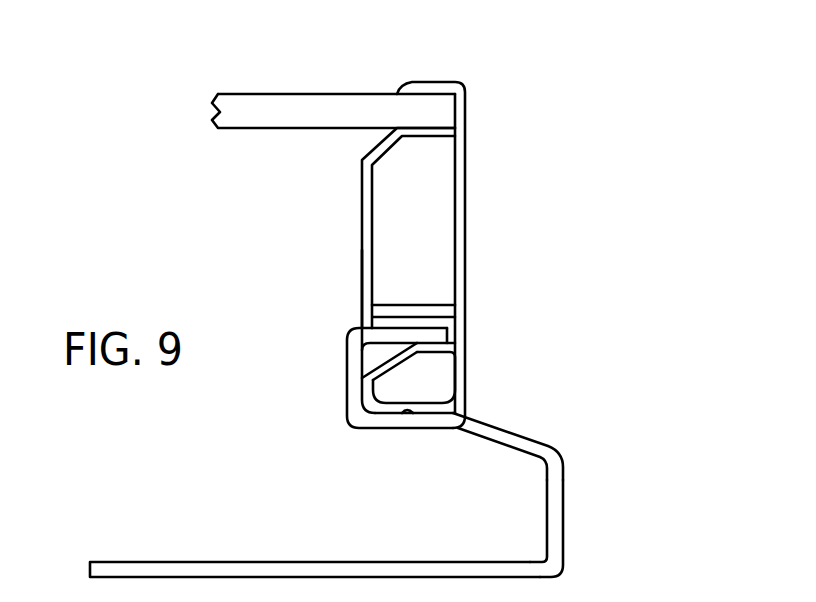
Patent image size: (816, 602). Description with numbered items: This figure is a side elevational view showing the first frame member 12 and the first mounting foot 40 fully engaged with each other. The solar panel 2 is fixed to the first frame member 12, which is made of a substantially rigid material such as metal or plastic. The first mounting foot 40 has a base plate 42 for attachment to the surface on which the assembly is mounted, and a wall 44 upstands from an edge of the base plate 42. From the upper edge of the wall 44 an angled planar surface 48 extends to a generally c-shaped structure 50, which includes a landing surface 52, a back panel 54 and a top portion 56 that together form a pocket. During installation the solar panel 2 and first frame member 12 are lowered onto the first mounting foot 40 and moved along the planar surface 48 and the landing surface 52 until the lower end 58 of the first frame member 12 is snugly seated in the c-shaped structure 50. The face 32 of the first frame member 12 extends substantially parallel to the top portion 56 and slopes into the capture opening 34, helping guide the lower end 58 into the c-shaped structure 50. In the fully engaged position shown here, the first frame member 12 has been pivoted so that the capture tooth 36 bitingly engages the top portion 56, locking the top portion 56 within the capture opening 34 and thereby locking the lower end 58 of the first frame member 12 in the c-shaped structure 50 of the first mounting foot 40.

The solar panel 2 is at (313, 93).
The first frame member 12 is at (465, 160).
The face 32 is at (375, 358).
The capture opening 34 is at (452, 336).
The capture tooth 36 is at (360, 323).
The first mounting foot 40 is at (383, 490).
The base plate 42 is at (187, 562).
The wall 44 is at (545, 488).
The angled planar surface 48 is at (523, 437).
The c-shaped structure 50 is at (382, 361).
The landing surface 52 is at (397, 415).
The back panel 54 is at (349, 382).
The top portion 56 is at (402, 327).
The lower end 58 is at (473, 380).